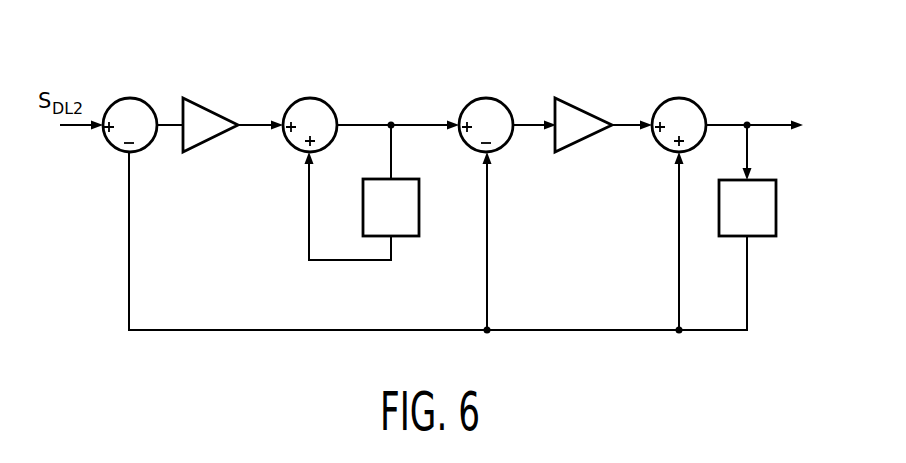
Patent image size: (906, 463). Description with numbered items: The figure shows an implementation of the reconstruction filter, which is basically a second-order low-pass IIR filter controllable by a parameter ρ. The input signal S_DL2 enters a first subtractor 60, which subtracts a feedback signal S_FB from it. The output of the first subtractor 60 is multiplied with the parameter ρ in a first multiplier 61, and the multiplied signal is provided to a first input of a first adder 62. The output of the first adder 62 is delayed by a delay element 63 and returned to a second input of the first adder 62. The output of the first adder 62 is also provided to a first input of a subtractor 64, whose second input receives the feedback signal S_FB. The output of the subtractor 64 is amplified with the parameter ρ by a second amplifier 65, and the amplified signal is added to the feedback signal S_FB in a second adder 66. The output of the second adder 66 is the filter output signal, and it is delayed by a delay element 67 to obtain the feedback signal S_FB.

The first subtractor 60 is at (148, 98).
The first multiplier 61 is at (218, 114).
The first adder 62 is at (330, 98).
The delay element 63 is at (419, 207).
The subtractor 64 is at (507, 98).
The second amplifier 65 is at (588, 112).
The second adder 66 is at (698, 98).
The delay element 67 is at (764, 237).